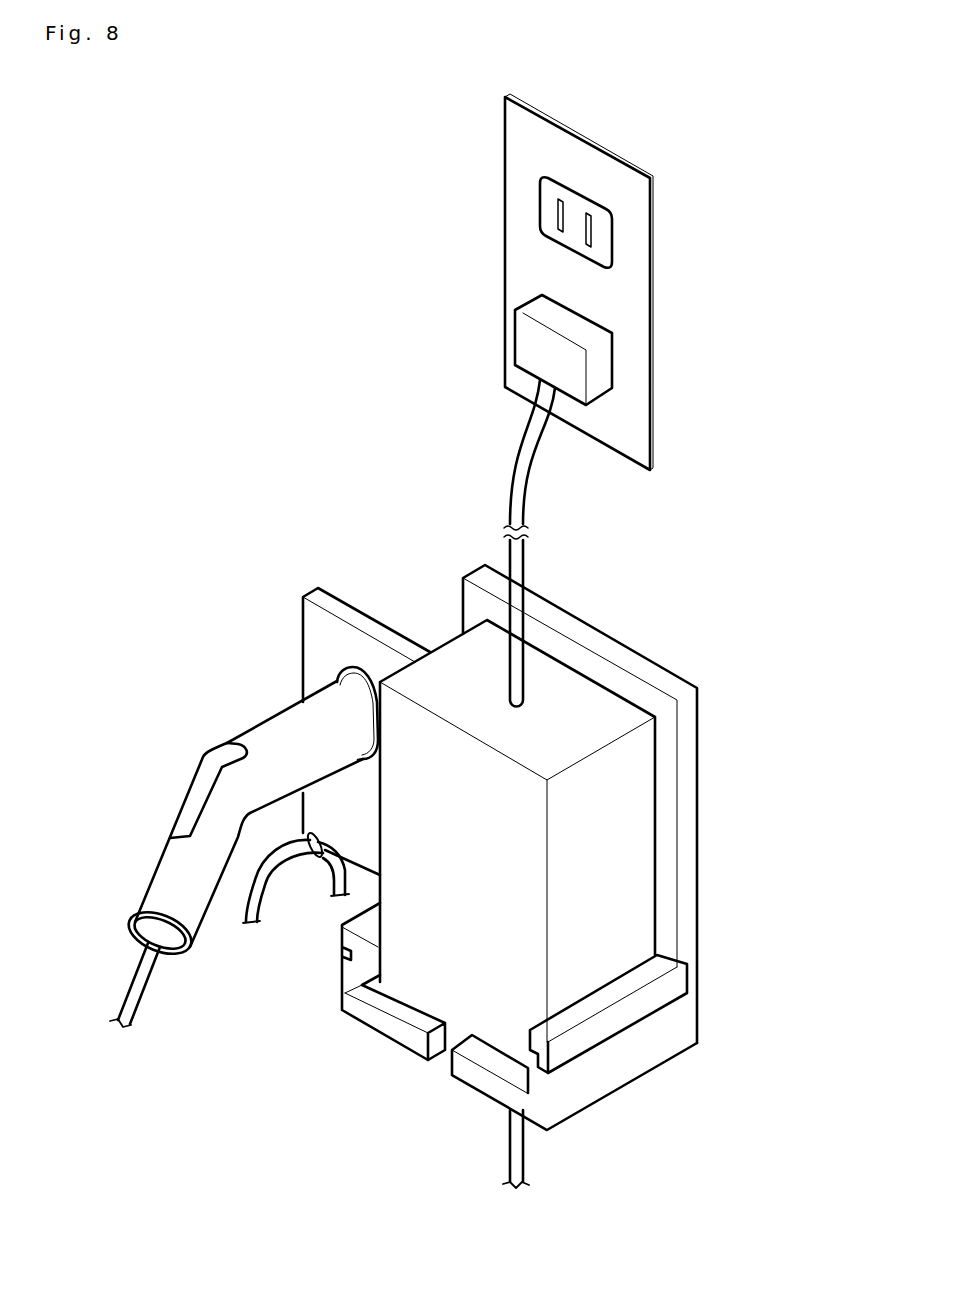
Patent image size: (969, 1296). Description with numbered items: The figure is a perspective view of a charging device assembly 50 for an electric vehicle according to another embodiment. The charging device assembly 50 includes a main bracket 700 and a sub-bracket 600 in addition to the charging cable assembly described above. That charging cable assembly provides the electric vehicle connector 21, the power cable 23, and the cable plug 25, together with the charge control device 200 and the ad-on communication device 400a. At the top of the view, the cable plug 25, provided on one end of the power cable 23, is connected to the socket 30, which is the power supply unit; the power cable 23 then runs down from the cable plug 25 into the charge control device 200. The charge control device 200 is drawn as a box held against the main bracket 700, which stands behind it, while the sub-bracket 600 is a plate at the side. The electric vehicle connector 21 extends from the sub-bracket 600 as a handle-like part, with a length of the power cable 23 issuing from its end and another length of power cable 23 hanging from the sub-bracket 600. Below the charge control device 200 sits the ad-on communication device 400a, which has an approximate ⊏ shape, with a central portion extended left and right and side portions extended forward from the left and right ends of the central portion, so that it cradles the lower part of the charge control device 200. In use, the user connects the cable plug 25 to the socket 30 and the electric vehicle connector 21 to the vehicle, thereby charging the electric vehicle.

The charging device assembly 50 is at (178, 157).
The socket 30 is at (532, 263).
The cable plug 25 is at (532, 345).
The charge control device 200 is at (556, 690).
The main bracket 700 is at (687, 798).
The sub-bracket 600 is at (313, 638).
The electric vehicle connector 21 is at (162, 878).
The power cable 23 is at (142, 973).
The ad-on communication device 400a is at (633, 1008).